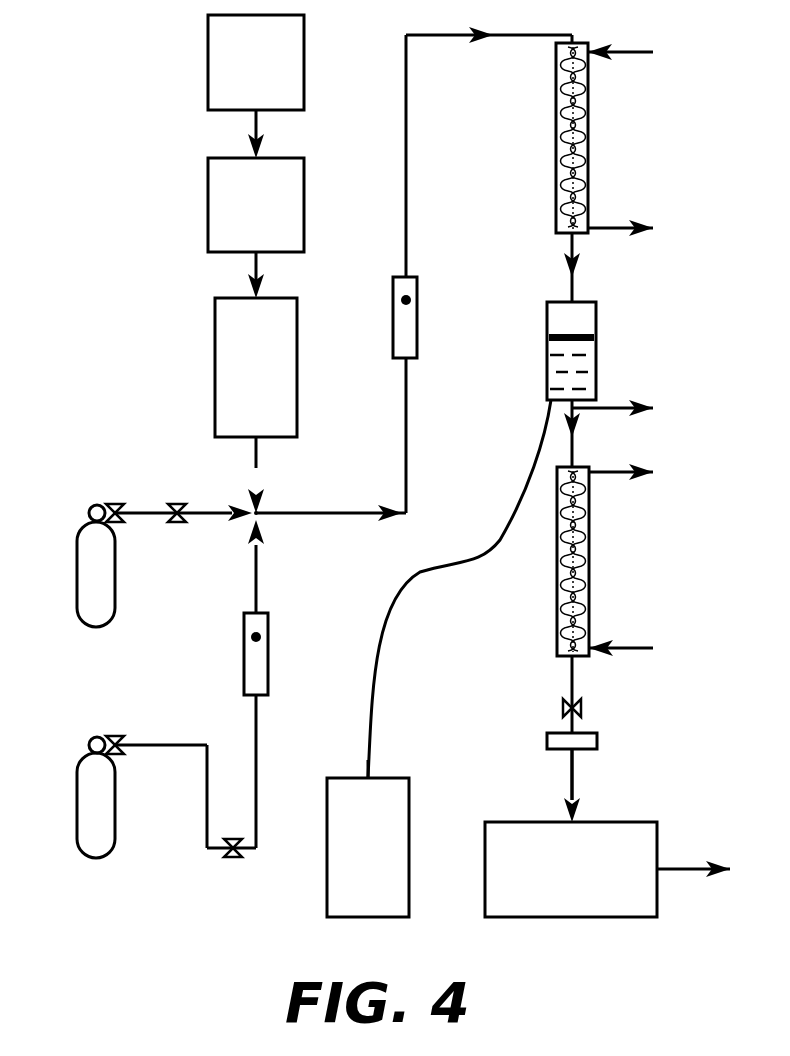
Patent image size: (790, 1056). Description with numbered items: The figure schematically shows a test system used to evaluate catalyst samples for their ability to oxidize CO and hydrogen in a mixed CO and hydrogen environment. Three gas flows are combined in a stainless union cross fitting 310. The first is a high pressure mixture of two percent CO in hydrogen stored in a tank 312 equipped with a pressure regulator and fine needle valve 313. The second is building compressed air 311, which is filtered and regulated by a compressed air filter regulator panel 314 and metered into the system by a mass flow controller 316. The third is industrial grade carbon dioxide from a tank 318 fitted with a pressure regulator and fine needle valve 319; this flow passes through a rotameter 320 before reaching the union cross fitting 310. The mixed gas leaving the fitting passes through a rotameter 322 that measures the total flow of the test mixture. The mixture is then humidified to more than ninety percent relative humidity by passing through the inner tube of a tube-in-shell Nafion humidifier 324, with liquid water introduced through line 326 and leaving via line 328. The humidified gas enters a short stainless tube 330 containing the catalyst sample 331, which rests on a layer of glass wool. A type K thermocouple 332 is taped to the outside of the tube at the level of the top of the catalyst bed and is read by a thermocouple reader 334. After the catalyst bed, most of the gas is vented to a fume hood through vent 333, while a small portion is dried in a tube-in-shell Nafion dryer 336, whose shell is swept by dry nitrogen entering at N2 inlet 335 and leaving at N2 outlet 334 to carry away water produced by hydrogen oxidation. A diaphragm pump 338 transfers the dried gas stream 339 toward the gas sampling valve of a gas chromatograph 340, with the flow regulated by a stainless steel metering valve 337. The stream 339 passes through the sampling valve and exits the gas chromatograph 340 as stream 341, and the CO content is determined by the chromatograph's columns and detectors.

The union cross fitting 310 is at (258, 512).
The building compressed air 311 is at (224, 80).
The tank 312 is at (77, 565).
The fine needle valve 313 is at (177, 500).
The compressed air filter regulator panel 314 is at (224, 220).
The mass flow controller 316 is at (224, 385).
The tank 318 is at (77, 798).
The fine needle valve 319 is at (233, 860).
The rotameter 320 is at (243, 654).
The rotameter 322 is at (393, 318).
The Nafion humidifier 324 is at (556, 150).
The line 326 is at (632, 52).
The line 328 is at (613, 230).
The stainless tube 330 is at (585, 313).
The catalyst sample 331 is at (585, 360).
The thermocouple 332 is at (540, 337).
The vent 333 is at (612, 410).
The thermocouple reader 334 is at (612, 474).
The N2 inlet 335 is at (632, 650).
The Nafion dryer 336 is at (557, 618).
The metering valve 337 is at (582, 708).
The diaphragm pump 338 is at (547, 743).
The dried gas stream 339 is at (573, 773).
The gas chromatograph 340 is at (537, 885).
The stream 341 is at (675, 872).